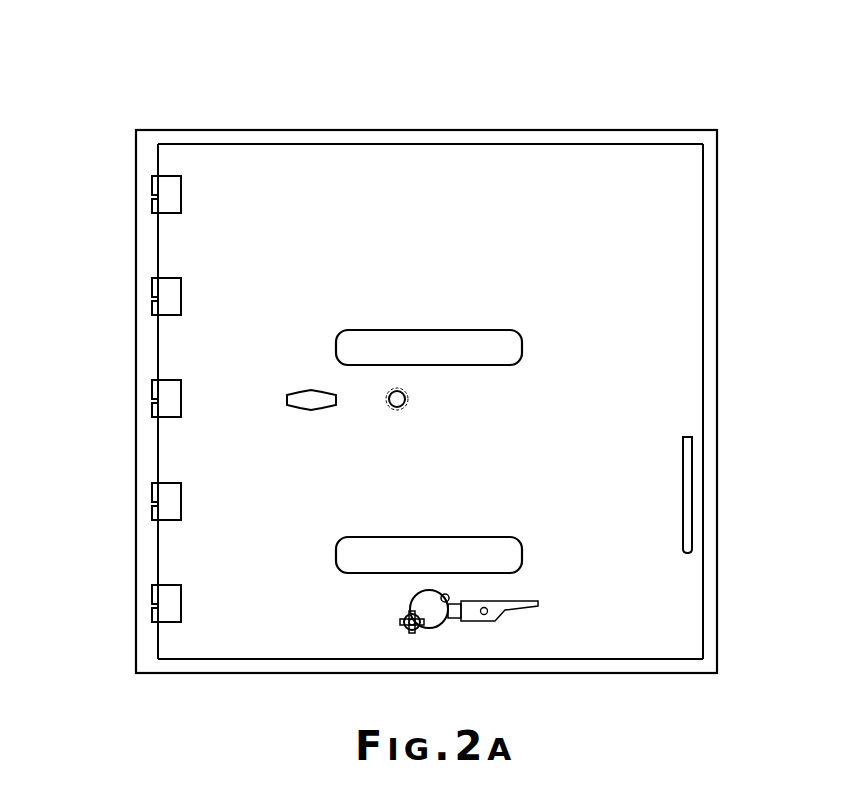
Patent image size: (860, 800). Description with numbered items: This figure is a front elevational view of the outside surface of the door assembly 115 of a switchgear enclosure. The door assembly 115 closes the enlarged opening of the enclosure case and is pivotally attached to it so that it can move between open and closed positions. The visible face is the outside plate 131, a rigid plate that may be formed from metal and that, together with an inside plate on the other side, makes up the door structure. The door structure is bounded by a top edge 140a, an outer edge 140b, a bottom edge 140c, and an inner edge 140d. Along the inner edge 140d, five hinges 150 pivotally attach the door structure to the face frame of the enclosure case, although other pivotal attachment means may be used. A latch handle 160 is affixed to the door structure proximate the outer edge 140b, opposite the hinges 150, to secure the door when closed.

The door assembly 115 is at (739, 96).
The outside plate 131 is at (585, 235).
The top edge 140a is at (488, 144).
The outer edge 140b is at (703, 279).
The bottom edge 140c is at (647, 659).
The inner edge 140d is at (158, 453).
The hinges 150 is at (167, 193).
The latch handle 160 is at (687, 487).